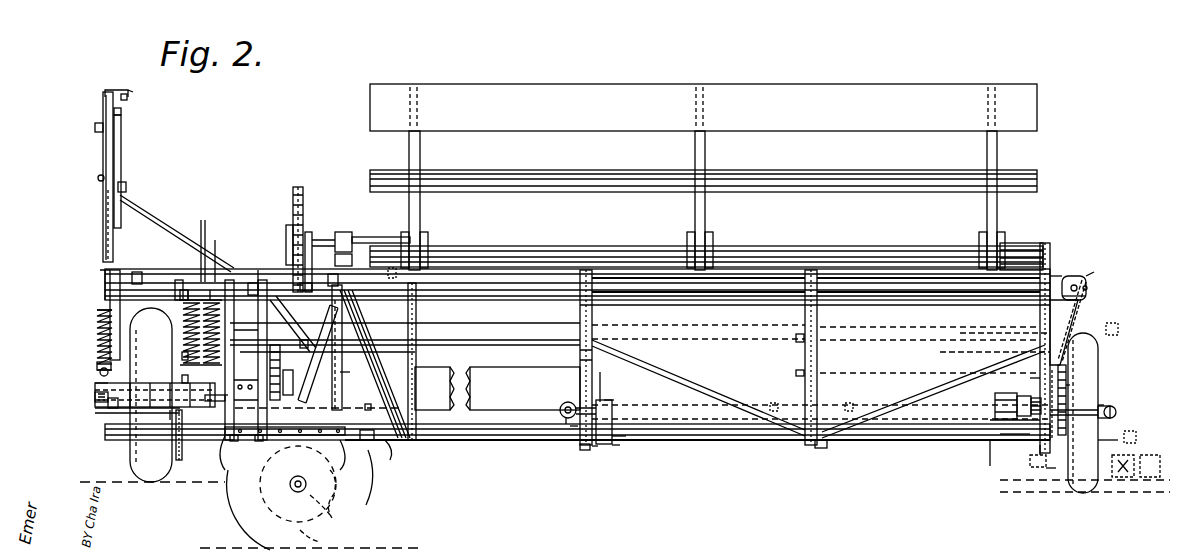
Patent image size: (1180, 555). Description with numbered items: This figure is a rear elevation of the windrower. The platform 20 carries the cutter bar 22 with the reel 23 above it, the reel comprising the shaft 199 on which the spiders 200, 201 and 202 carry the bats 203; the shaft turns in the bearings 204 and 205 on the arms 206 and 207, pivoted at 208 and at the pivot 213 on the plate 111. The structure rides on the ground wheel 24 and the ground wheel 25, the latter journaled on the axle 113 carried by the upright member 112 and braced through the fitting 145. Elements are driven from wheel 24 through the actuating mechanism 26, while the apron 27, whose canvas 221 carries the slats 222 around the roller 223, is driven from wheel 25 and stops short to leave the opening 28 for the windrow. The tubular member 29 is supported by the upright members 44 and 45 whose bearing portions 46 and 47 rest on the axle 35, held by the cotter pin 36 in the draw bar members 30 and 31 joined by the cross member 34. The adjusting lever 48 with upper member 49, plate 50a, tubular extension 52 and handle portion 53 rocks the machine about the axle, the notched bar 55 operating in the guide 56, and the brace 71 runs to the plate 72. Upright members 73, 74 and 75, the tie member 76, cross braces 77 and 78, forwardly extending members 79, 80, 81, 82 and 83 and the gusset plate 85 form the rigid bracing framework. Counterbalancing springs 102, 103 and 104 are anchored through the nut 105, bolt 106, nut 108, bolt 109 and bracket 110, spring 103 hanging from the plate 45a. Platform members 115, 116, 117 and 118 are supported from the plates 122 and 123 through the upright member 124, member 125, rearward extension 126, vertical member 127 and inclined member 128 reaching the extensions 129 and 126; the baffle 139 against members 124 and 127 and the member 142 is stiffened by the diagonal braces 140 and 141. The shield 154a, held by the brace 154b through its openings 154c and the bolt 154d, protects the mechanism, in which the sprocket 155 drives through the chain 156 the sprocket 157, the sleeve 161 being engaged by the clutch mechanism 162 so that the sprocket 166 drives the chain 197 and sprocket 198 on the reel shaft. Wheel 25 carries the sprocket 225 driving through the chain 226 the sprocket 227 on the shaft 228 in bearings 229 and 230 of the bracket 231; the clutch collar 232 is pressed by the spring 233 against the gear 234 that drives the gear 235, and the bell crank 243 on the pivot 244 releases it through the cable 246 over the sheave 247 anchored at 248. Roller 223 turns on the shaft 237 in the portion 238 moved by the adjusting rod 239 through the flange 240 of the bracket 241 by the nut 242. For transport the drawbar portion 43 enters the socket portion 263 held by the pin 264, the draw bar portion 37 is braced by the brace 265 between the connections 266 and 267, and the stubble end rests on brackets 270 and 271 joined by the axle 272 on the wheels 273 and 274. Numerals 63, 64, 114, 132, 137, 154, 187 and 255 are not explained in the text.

The platform 20 is at (771, 448).
The cutter bar 22 is at (440, 420).
The reel 23 is at (866, 99).
The ground wheel 24 is at (123, 453).
The ground wheel 25 is at (1108, 383).
The actuating mechanism 26 is at (180, 460).
The apron 27 is at (873, 376).
The opening 28 is at (472, 440).
The tubular member 29 is at (478, 290).
The forwardly extending member 30 is at (95, 410).
The forwardly extending member 31 is at (235, 440).
The cross member 34 is at (175, 392).
The axle 35 is at (95, 384).
The cotter pin 36 is at (89, 399).
The draw bar portion 37 is at (1120, 470).
The drawbar portion 43 is at (1040, 490).
The upright member 44 is at (137, 275).
The upright member 45 is at (178, 282).
The plate 45a is at (203, 250).
The bearing portion 46 is at (115, 407).
The bearing portion 47 is at (225, 440).
The adjusting lever 48 is at (94, 181).
The upper member 49 is at (105, 225).
The plate 50a is at (105, 278).
The tubular extension 52 is at (96, 153).
The handle portion 53 is at (112, 90).
The notched bar 55 is at (121, 150).
The guide 56 is at (126, 186).
The collar 63 is at (122, 114).
The bracket 64 is at (127, 96).
The brace 71 is at (165, 222).
The plate 72 is at (252, 285).
The upright member 73 is at (338, 280).
The upright member 74 is at (290, 480).
The upright member 75 is at (368, 440).
The tie member 76 is at (345, 440).
The cross brace 77 is at (300, 290).
The cross brace 78 is at (300, 428).
The forwardly extending member 79 is at (256, 345).
The forwardly extending member 80 is at (228, 395).
The forwardly extending member 81 is at (338, 358).
The forwardly extending member 82 is at (368, 408).
The member 83 is at (305, 345).
The gusset plate 85 is at (292, 379).
The counterbalancing spring 102 is at (97, 333).
The counterbalancing spring 103 is at (180, 335).
The counterbalancing spring 104 is at (215, 260).
The nut 105 is at (100, 365).
The bolt 106 is at (100, 370).
The nut 108 is at (182, 380).
The bolt 109 is at (170, 420).
The bracket 110 is at (215, 399).
The plate 111 is at (1088, 287).
The upright member 112 is at (1090, 330).
The axle 113 is at (1099, 405).
The block 114 is at (1035, 405).
The member 115 is at (990, 470).
The member 116 is at (868, 438).
The member 117 is at (598, 446).
The member 118 is at (822, 445).
The plate 122 is at (594, 278).
The plate 123 is at (828, 279).
The upright member 124 is at (796, 372).
The member 125 is at (795, 340).
The rearward extension 126 is at (806, 446).
The vertical member 127 is at (578, 362).
The inclined member 128 is at (578, 316).
The extension 129 is at (594, 448).
The bracket 132 is at (852, 445).
The bracket 137 is at (585, 450).
The baffle 139 is at (698, 344).
The diagonal brace 140 is at (662, 372).
The diagonal brace 141 is at (960, 380).
The member 142 is at (1045, 333).
The fitting 145 is at (1117, 410).
The post 154 is at (494, 361).
The shield 154a is at (395, 352).
The brace 154b is at (340, 375).
The openings 154c is at (390, 450).
The bolt 154d is at (310, 408).
The sprocket 155 is at (178, 435).
The chain 156 is at (182, 358).
The sprocket 157 is at (180, 295).
The sleeve 161 is at (258, 290).
The clutch mechanism 162 is at (308, 250).
The sprocket 166 is at (352, 296).
The rack 187 is at (280, 401).
The chain 197 is at (292, 212).
The sprocket 198 is at (292, 229).
The shaft 199 is at (348, 233).
The spider 200 is at (420, 206).
The spider 201 is at (705, 207).
The spider 202 is at (1004, 224).
The bat 203 is at (946, 128).
The bearing 204 is at (356, 240).
The bearing 205 is at (1048, 250).
The arm 206 is at (352, 262).
The arm 207 is at (1070, 280).
The pivot 208 is at (388, 272).
The pivot 213 is at (1035, 275).
The canvas 221 is at (553, 411).
The slats 222 is at (774, 403).
The roller 223 is at (570, 430).
The sprocket 225 is at (1060, 380).
The chain 226 is at (1070, 384).
The sprocket 227 is at (1116, 418).
The shaft 228 is at (1040, 445).
The bearing 229 is at (1121, 438).
The bearing 230 is at (1000, 420).
The bracket 231 is at (995, 400).
The clutch collar 232 is at (1030, 395).
The spring 233 is at (1059, 395).
The gear 234 is at (1030, 435).
The gear 235 is at (1045, 438).
The shaft 237 is at (580, 445).
The portion 238 is at (566, 420).
The adjusting rod 239 is at (600, 384).
The flange 240 is at (618, 450).
The bracket 241 is at (625, 437).
The nut 242 is at (604, 410).
The bell crank 243 is at (985, 352).
The pivot 244 is at (1035, 380).
The cable 246 is at (1090, 292).
The sheave 247 is at (1100, 282).
The anchorage 248 is at (1085, 282).
The tab 255 is at (97, 128).
The socket portion 263 is at (1043, 470).
The pin 264 is at (1035, 460).
The brace 265 is at (1117, 330).
The connection 266 is at (1095, 305).
The connection 267 is at (1135, 480).
The bracket 270 is at (300, 500).
The bracket 271 is at (300, 484).
The axle 272 is at (340, 499).
The wheel 273 is at (351, 514).
The wheel 274 is at (336, 544).